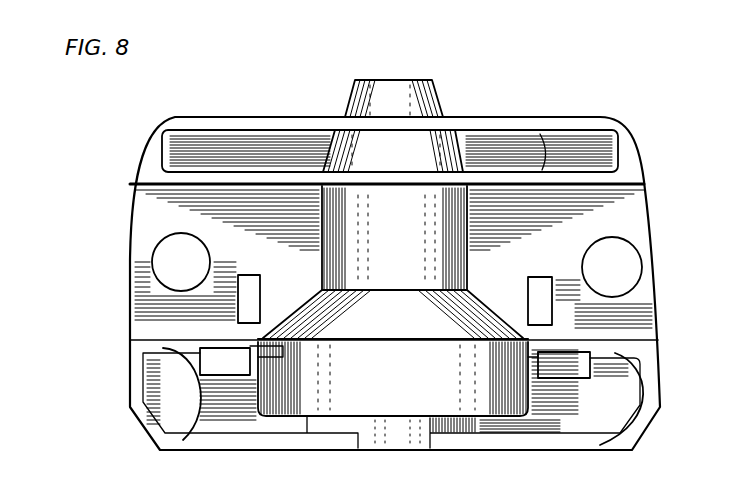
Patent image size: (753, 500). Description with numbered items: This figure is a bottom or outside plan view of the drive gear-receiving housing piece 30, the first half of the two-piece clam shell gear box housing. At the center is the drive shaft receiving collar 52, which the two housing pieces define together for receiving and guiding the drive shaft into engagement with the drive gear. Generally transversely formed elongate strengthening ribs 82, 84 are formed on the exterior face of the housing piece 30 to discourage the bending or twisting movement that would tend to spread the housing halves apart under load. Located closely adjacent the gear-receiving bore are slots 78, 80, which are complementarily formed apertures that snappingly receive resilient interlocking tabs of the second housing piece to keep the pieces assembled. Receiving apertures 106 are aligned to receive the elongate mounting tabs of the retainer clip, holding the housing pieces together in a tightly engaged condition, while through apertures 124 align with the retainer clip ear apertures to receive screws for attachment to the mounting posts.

The drive gear-receiving housing piece 30 is at (133, 184).
The drive shaft receiving collar 52 is at (390, 76).
The strengthening rib 82 is at (275, 120).
The slot 80 is at (257, 283).
The slot 78 is at (536, 290).
The receiving aperture 106 is at (213, 350).
The strengthening rib 84 is at (158, 396).
The through aperture 124 is at (160, 257).